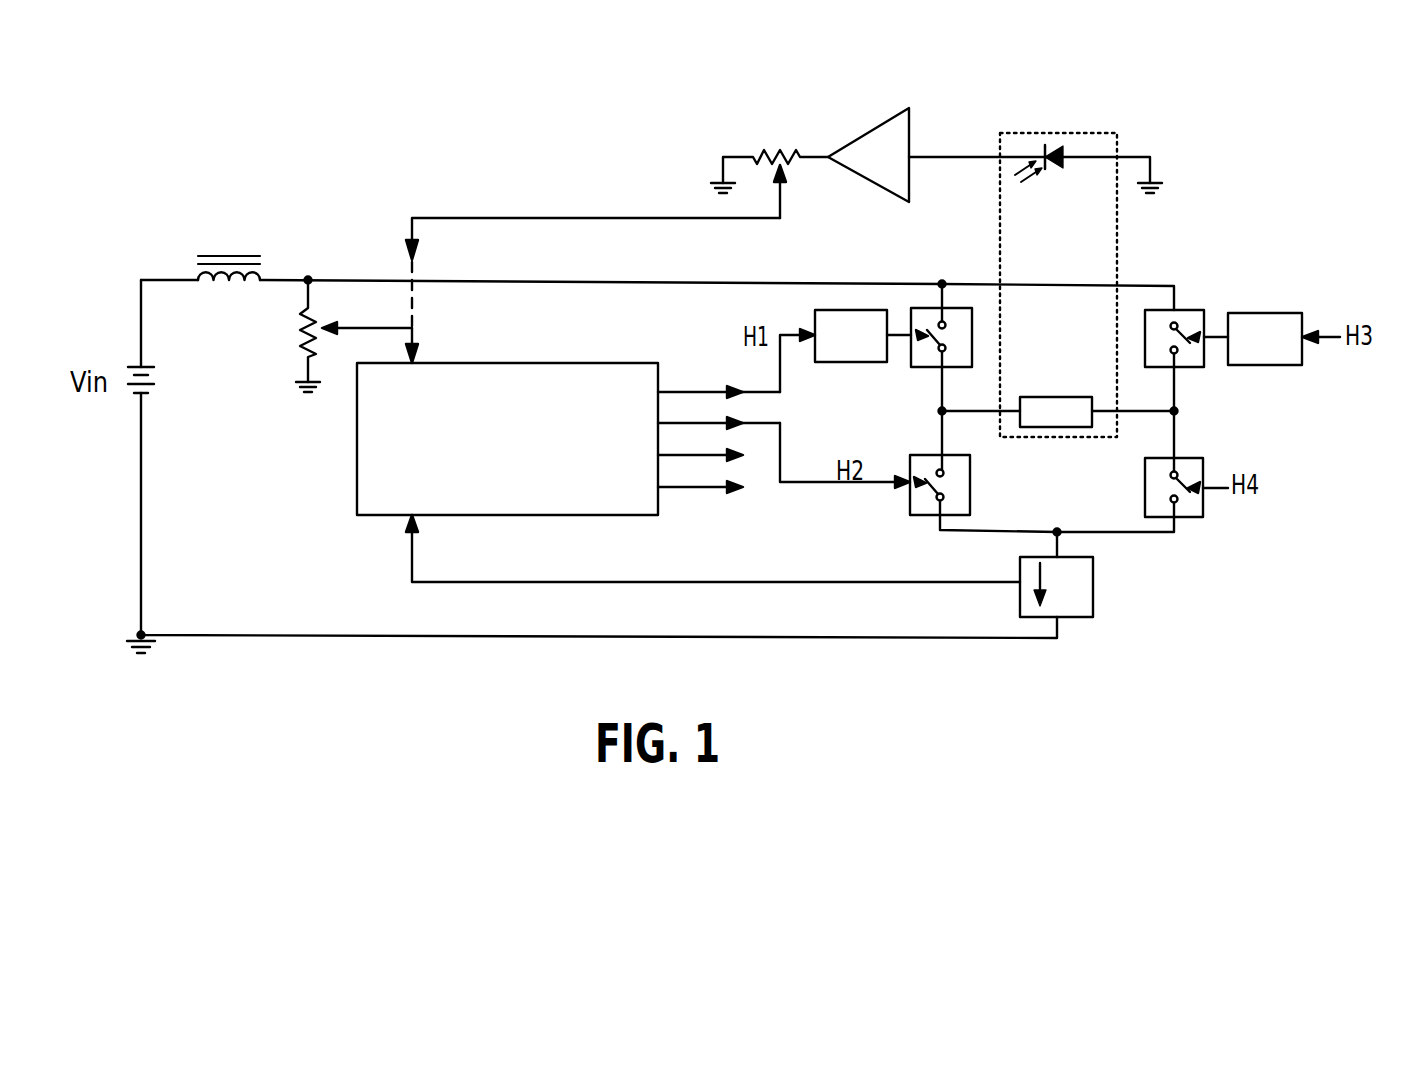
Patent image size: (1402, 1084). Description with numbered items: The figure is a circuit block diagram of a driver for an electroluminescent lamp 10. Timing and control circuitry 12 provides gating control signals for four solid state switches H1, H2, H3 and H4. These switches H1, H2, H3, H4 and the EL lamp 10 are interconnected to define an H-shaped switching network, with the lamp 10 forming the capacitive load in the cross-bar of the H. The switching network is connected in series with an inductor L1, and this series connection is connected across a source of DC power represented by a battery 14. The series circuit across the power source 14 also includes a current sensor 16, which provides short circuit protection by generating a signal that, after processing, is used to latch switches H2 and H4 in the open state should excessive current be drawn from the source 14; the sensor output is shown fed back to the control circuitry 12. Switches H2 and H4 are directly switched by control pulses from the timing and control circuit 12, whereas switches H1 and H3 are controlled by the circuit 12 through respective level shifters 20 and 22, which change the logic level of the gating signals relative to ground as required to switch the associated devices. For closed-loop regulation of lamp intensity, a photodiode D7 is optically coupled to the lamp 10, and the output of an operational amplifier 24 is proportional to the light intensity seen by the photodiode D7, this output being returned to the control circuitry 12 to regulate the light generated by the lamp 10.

The electroluminescent lamp 10 is at (1052, 386).
The timing and control circuitry 12 is at (529, 510).
The battery 14 is at (158, 380).
The current sensor 16 is at (1093, 603).
The level shifter 20 is at (851, 310).
The level shifter 22 is at (1253, 313).
The operational amplifier 24 is at (880, 126).
The photodiode D7 is at (1070, 150).
The inductor L1 is at (229, 254).
The solid state switch H1 is at (960, 367).
The solid state switch H2 is at (972, 502).
The solid state switch H3 is at (1196, 308).
The solid state switch H4 is at (1143, 490).